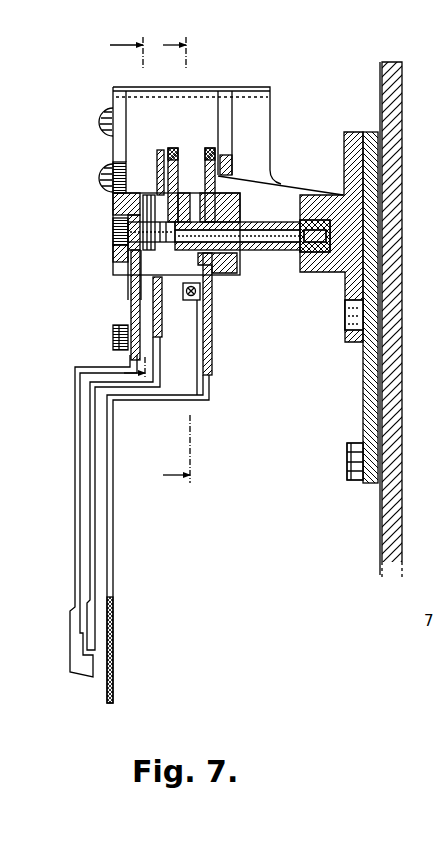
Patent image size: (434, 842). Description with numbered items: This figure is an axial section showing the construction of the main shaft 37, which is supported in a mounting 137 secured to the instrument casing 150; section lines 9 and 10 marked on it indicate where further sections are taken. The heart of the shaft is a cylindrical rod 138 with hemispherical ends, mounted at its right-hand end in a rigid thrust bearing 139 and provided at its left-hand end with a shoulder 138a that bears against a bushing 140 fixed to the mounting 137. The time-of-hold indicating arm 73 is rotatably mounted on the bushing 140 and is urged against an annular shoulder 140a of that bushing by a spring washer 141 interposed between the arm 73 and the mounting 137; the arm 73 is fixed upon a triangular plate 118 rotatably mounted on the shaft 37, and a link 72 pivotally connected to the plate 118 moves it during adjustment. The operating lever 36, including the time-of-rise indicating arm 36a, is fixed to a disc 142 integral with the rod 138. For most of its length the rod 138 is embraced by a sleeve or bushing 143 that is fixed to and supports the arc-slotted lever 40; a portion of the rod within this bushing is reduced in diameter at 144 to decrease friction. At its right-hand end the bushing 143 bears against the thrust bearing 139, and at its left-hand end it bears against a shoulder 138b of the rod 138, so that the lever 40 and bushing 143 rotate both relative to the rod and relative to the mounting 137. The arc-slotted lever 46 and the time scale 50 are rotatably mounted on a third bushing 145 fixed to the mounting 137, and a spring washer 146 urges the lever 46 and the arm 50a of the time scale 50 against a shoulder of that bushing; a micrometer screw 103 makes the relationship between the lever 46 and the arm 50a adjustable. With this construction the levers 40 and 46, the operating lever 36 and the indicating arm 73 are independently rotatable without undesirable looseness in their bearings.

The section line 9- 9 is at (129, 197).
The section line 10- 10 is at (182, 263).
The mounting 137 is at (243, 93).
The arc-slotted lever 40 is at (175, 150).
The arc-slotted lever 46 is at (208, 150).
The shoulder 138b is at (165, 193).
The disc 142 is at (150, 215).
The bushing 140 is at (112, 212).
The main shaft 37 is at (63, 235).
The shoulder 138a is at (113, 223).
The cylindrical rod 138 is at (113, 243).
The spring washer 141 is at (113, 267).
The third bushing 145 is at (200, 215).
The spring washer 146 is at (223, 277).
The sleeve or bushing 143 is at (276, 207).
The reduced diameter portion 144 is at (262, 233).
The thrust bearing 139 is at (315, 247).
The casing 150 is at (395, 550).
The triangular plate 118 is at (131, 303).
The annular shoulder 140a is at (145, 275).
The link 72 is at (113, 333).
The main operating lever 36 is at (162, 300).
The micrometer screw 103 is at (192, 300).
The arm 50a is at (212, 352).
The time-of-hold indicating arm 73 is at (75, 447).
The time-of-rise indicating arm 36a is at (90, 503).
The time scale 50 is at (107, 685).